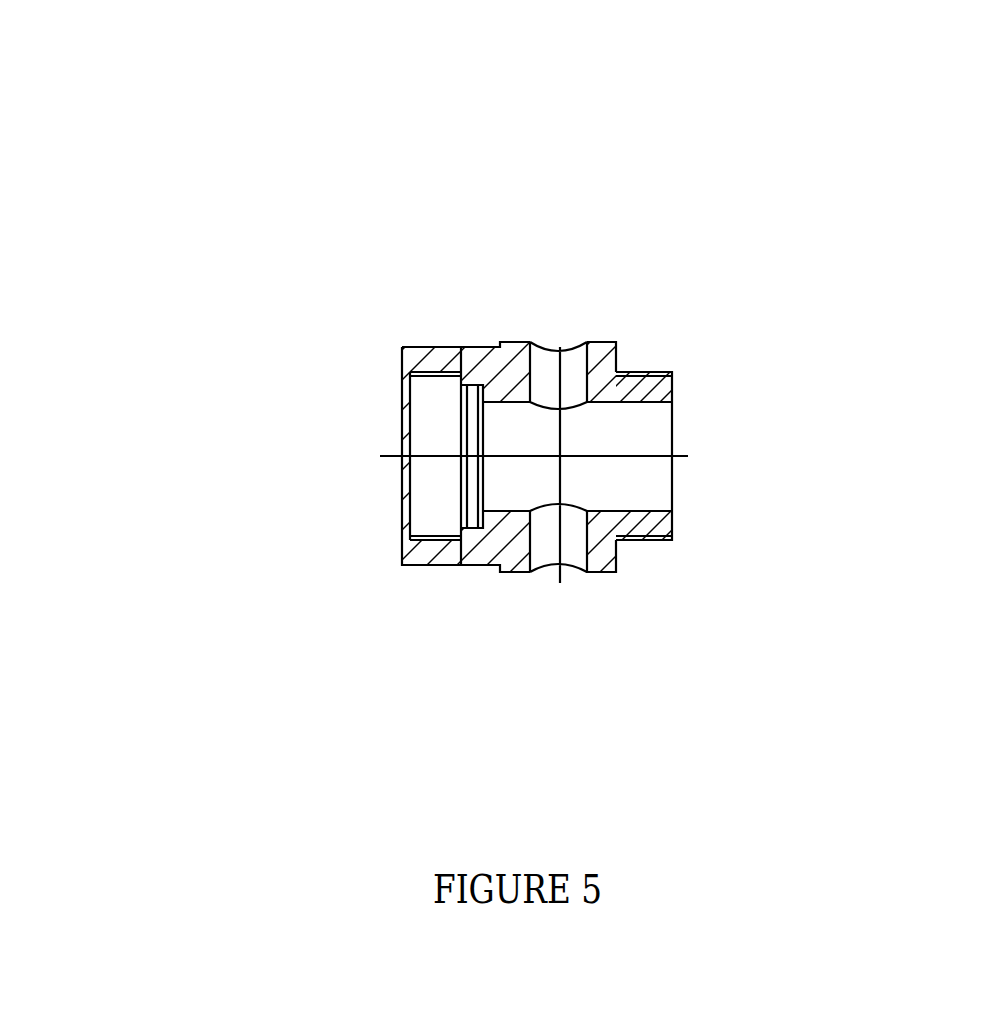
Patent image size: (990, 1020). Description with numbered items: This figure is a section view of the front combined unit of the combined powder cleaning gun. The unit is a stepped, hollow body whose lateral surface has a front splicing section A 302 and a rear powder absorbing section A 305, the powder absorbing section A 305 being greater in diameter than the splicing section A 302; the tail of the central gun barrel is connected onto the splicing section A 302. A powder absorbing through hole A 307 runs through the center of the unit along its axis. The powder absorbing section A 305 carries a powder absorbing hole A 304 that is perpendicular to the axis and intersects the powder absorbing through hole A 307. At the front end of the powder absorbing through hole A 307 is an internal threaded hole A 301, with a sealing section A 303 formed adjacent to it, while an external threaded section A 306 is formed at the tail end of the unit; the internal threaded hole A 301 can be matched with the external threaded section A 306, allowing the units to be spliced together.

The internal threaded hole A 301 is at (418, 541).
The splicing section A 302 is at (437, 348).
The sealing section A 303 is at (466, 386).
The powder absorbing hole A 304 is at (560, 347).
The powder absorbing section A 305 is at (600, 346).
The external threaded section A 306 is at (634, 373).
The powder absorbing through hole A 307 is at (646, 457).